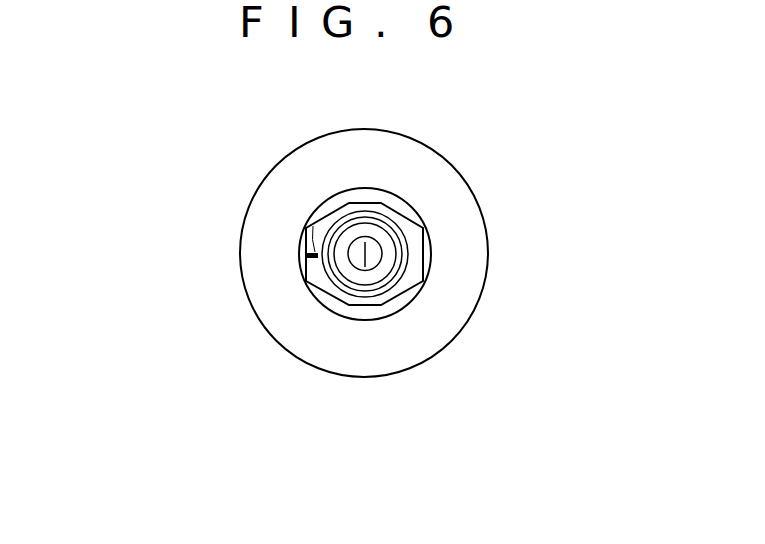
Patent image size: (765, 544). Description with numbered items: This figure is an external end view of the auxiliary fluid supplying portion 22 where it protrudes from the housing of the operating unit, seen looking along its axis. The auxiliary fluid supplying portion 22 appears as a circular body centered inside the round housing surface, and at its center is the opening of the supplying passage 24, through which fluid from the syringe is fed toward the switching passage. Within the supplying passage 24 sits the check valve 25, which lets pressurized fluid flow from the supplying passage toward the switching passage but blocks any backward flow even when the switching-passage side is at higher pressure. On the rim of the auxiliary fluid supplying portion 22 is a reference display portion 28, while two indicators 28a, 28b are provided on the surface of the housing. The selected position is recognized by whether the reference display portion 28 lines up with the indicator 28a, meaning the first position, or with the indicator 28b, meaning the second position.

The auxiliary fluid supplying portion 22 is at (441, 250).
The supplying passage 24 is at (369, 284).
The check valve 25 is at (374, 258).
The reference display portion 28 is at (313, 226).
The indicator 28a is at (288, 257).
The indicator 28b is at (291, 291).